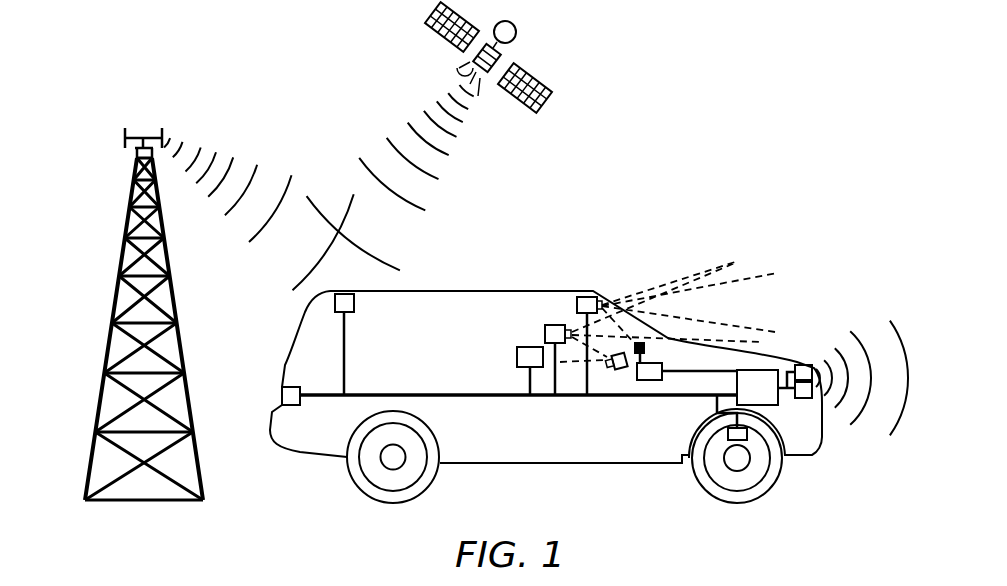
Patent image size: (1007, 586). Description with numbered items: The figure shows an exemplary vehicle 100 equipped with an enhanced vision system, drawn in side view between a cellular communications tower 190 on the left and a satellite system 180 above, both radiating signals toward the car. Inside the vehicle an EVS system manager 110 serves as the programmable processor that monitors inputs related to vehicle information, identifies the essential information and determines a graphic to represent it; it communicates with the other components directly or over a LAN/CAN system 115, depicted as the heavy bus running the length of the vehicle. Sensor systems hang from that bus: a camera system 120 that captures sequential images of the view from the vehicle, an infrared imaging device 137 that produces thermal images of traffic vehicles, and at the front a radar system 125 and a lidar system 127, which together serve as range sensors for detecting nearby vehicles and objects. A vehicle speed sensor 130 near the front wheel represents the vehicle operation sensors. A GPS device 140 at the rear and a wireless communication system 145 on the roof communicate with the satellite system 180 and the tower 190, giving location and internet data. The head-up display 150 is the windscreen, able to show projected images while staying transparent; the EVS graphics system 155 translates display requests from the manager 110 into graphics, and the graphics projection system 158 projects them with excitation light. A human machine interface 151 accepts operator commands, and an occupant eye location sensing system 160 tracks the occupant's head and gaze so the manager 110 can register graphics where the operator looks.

The vehicle 100 is at (512, 291).
The EVS system manager 110 is at (768, 398).
The LAN/CAN system 115 is at (378, 394).
The camera system 120 is at (588, 297).
The radar system 125 is at (812, 388).
The lidar system 127 is at (808, 365).
The vehicle speed sensor 130 is at (748, 436).
The infrared (IR) imaging device 137 is at (551, 325).
The GPS device 140 is at (282, 397).
The wireless communication system 145 is at (335, 303).
The head-up display (HUD) 150 is at (655, 345).
The human machine interface (HMI) 151 is at (517, 357).
The EVS graphics system 155 is at (652, 380).
The graphics projection system 158 is at (640, 343).
The occupant eye location sensing system 160 is at (614, 371).
The satellite system 180 is at (462, 68).
The cellular communications tower 190 is at (118, 281).